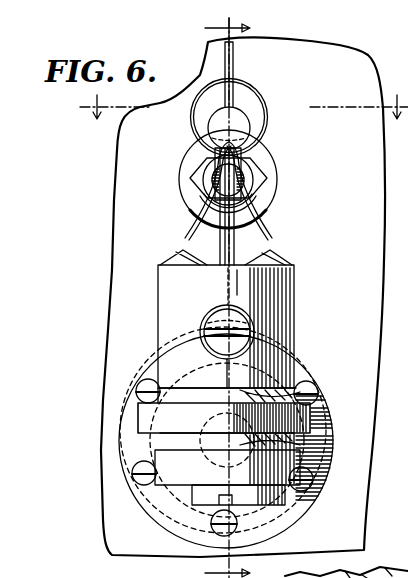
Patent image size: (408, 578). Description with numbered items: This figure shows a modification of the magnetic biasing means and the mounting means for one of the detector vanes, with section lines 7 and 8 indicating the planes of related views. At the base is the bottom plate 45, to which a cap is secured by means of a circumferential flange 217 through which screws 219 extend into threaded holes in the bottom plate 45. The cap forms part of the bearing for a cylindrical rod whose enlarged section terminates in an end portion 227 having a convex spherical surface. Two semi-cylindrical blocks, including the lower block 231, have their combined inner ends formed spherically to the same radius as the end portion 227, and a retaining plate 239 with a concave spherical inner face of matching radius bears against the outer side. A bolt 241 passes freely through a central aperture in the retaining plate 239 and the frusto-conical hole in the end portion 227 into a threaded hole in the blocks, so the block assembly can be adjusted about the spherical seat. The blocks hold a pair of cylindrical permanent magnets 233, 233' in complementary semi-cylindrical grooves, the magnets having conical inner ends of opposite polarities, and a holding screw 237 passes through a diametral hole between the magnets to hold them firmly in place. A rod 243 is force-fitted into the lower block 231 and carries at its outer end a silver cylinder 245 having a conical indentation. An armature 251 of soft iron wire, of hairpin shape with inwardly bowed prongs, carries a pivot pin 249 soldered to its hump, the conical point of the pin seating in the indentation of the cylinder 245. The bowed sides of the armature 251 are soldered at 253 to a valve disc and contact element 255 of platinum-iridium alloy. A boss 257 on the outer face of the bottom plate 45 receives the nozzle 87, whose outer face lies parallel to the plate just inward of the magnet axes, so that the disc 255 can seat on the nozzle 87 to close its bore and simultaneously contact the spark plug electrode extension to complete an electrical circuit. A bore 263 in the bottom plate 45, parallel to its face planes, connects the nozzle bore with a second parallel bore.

The section line 8- 8 is at (220, 298).
The section line 7- 7 is at (244, 115).
The bottom plate 45 is at (118, 270).
The pivot pin 249 is at (227, 55).
The armature 251 is at (247, 84).
The silver cylinder 245 is at (240, 121).
The boss 257 is at (185, 152).
The nozzle 87 is at (197, 183).
The valve disc and contact element 255 is at (251, 164).
The solder joint 253 is at (245, 183).
The rod 243 is at (232, 237).
The cylindrical permanent magnet 233 is at (172, 239).
The cylindrical permanent magnet 233' is at (289, 247).
The semi-cylindrical block 231 is at (178, 298).
The holding screw 237 is at (238, 322).
The screw 219 is at (150, 384).
The end portion 227 is at (140, 415).
The circumferential flange 217 is at (333, 447).
The retaining plate 239 is at (183, 475).
The bolt 241 is at (268, 521).
The bore 263 is at (372, 568).